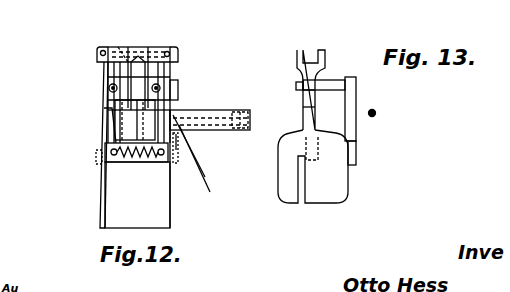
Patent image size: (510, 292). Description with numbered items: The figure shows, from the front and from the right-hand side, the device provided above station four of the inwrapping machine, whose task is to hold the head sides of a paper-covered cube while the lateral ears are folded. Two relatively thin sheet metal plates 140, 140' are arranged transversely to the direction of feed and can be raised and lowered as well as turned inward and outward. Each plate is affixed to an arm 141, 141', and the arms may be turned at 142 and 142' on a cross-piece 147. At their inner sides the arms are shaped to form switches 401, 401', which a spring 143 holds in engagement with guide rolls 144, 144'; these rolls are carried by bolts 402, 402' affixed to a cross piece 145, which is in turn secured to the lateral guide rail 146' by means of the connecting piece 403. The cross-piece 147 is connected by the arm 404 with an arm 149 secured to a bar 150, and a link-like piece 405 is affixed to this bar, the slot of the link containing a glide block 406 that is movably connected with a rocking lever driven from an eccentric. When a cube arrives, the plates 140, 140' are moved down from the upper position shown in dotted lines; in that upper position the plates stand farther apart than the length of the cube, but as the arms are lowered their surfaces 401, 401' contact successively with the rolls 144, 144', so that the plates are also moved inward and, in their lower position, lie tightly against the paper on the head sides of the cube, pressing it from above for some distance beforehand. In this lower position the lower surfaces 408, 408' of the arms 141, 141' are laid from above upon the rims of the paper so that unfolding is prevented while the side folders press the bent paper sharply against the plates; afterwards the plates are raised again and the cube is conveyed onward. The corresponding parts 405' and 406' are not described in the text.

In FIG. 12, the sheet metal plate 140 is at (84, 145).
In FIG. 13, the sheet metal plate 140 is at (333, 166).
In FIG. 12, the sheet metal plate 140' is at (196, 169).
In FIG. 12, the arm 141 is at (117, 95).
In FIG. 13, the arm 141 is at (335, 90).
In FIG. 12, the arm 141' is at (197, 100).
In FIG. 12, the pivot 142 is at (85, 52).
In FIG. 12, the pivot 142' is at (195, 51).
In FIG. 12, the spring 143 is at (136, 164).
In FIG. 12, the guide roll 144 is at (85, 102).
In FIG. 13, the guide roll 144 is at (330, 101).
In FIG. 12, the guide roll 144' is at (209, 100).
In FIG. 12, the cross piece 145 is at (172, 80).
In FIG. 13, the cross piece 145 is at (356, 91).
In FIG. 13, the lateral guide rail 146' is at (374, 165).
In FIG. 12, the cross-piece 147 is at (146, 50).
In FIG. 12, the arm 149 is at (206, 136).
In FIG. 13, the bar 150 is at (284, 105).
In FIG. 12, the switch 401 is at (102, 127).
In FIG. 12, the switch 401' is at (208, 150).
In FIG. 12, the bolt 402 is at (87, 87).
In FIG. 13, the bolt 402 is at (288, 78).
In FIG. 12, the bolt 402' is at (211, 84).
In FIG. 13, the connecting piece 403 is at (356, 125).
In FIG. 12, the arm 404 is at (134, 66).
In FIG. 12, the link-like piece 405 is at (73, 160).
In FIG. 12, the arm 405' is at (210, 155).
In FIG. 12, the glide block 406 is at (76, 125).
In FIG. 12, the slot 406' is at (196, 136).
In FIG. 12, the lower surface 408 is at (131, 195).
In FIG. 12, the lower surface 408' is at (163, 182).